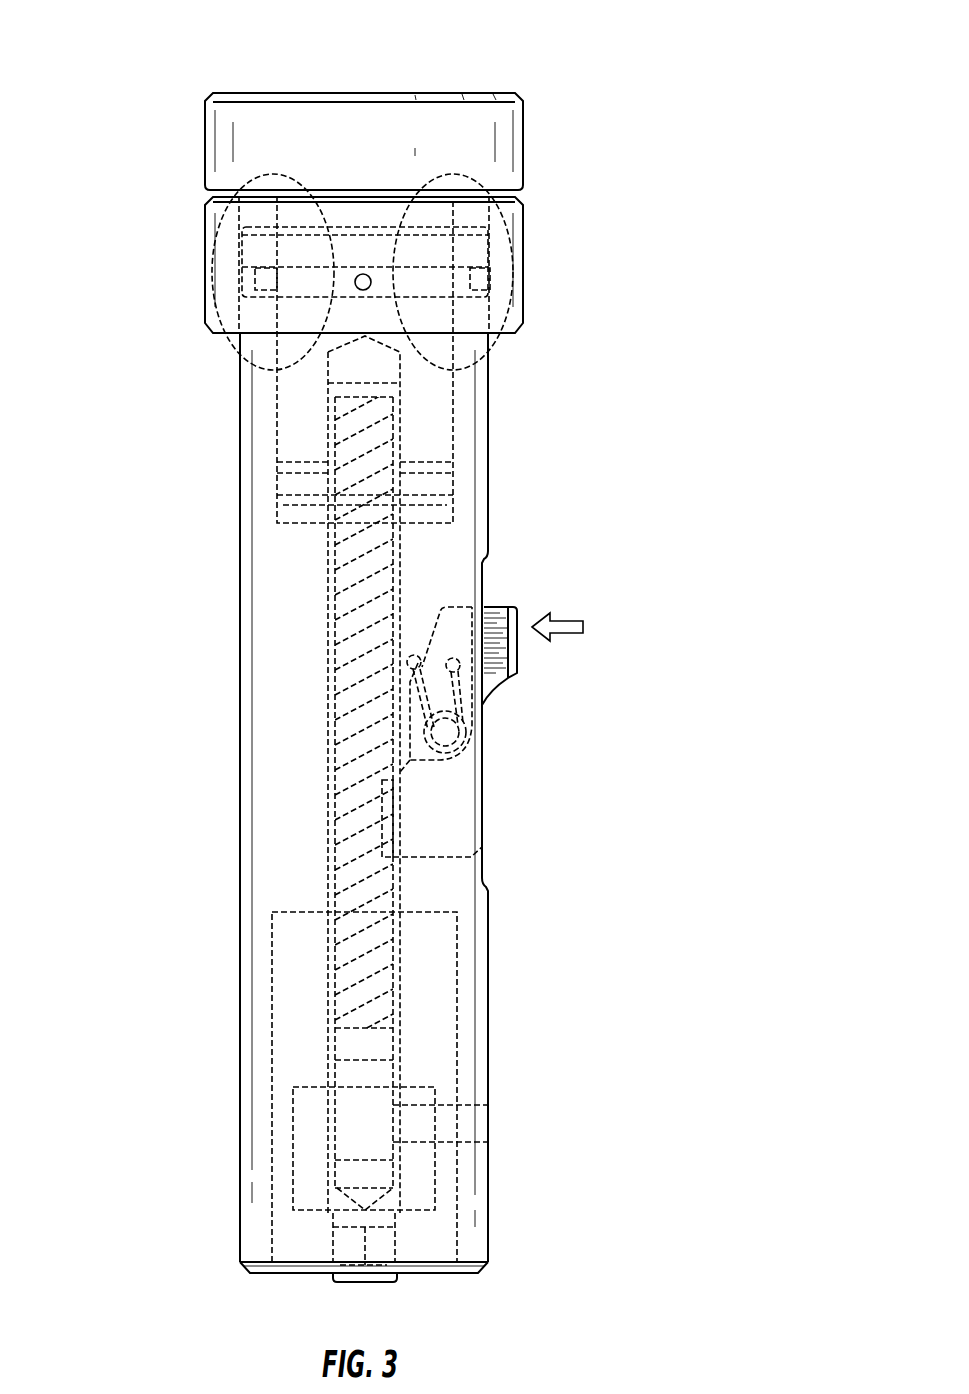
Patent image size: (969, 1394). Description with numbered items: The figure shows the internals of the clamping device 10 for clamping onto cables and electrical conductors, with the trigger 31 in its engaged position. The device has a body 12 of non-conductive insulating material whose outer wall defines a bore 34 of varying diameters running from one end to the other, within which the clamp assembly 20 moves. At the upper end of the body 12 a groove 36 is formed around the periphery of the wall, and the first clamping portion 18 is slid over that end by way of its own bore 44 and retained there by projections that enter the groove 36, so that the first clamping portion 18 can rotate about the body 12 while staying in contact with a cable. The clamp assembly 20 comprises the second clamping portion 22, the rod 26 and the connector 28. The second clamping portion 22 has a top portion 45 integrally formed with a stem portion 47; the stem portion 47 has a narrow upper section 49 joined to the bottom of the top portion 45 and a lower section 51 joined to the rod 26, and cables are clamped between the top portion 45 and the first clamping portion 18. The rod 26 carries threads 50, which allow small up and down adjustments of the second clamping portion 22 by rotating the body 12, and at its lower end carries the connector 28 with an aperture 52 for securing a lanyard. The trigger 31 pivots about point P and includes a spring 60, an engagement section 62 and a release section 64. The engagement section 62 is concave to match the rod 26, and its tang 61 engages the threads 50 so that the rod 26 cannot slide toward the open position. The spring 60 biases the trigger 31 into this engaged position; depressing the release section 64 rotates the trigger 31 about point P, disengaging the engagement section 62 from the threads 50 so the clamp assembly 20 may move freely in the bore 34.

The clamping device 10 is at (665, 74).
The body 12 is at (492, 912).
The first clamping portion 18 is at (517, 307).
The clamp assembly 20 is at (170, 62).
The second clamping portion 22 is at (377, 172).
The rod 26 is at (393, 998).
The connector 28 is at (420, 1185).
The trigger 31 is at (508, 642).
The bore 34 is at (433, 343).
The groove 36 is at (478, 278).
The bore 44 is at (245, 215).
The top portion 45 is at (518, 138).
The stem portion 47 is at (330, 315).
The upper section 49 is at (350, 253).
The threads 50 is at (347, 972).
The lower section 51 is at (430, 442).
The aperture 52 is at (355, 1282).
The spring 60 is at (460, 687).
The tang 61 is at (405, 846).
The engagement section 62 is at (410, 808).
The release section 64 is at (515, 605).
The pivot point P is at (447, 723).